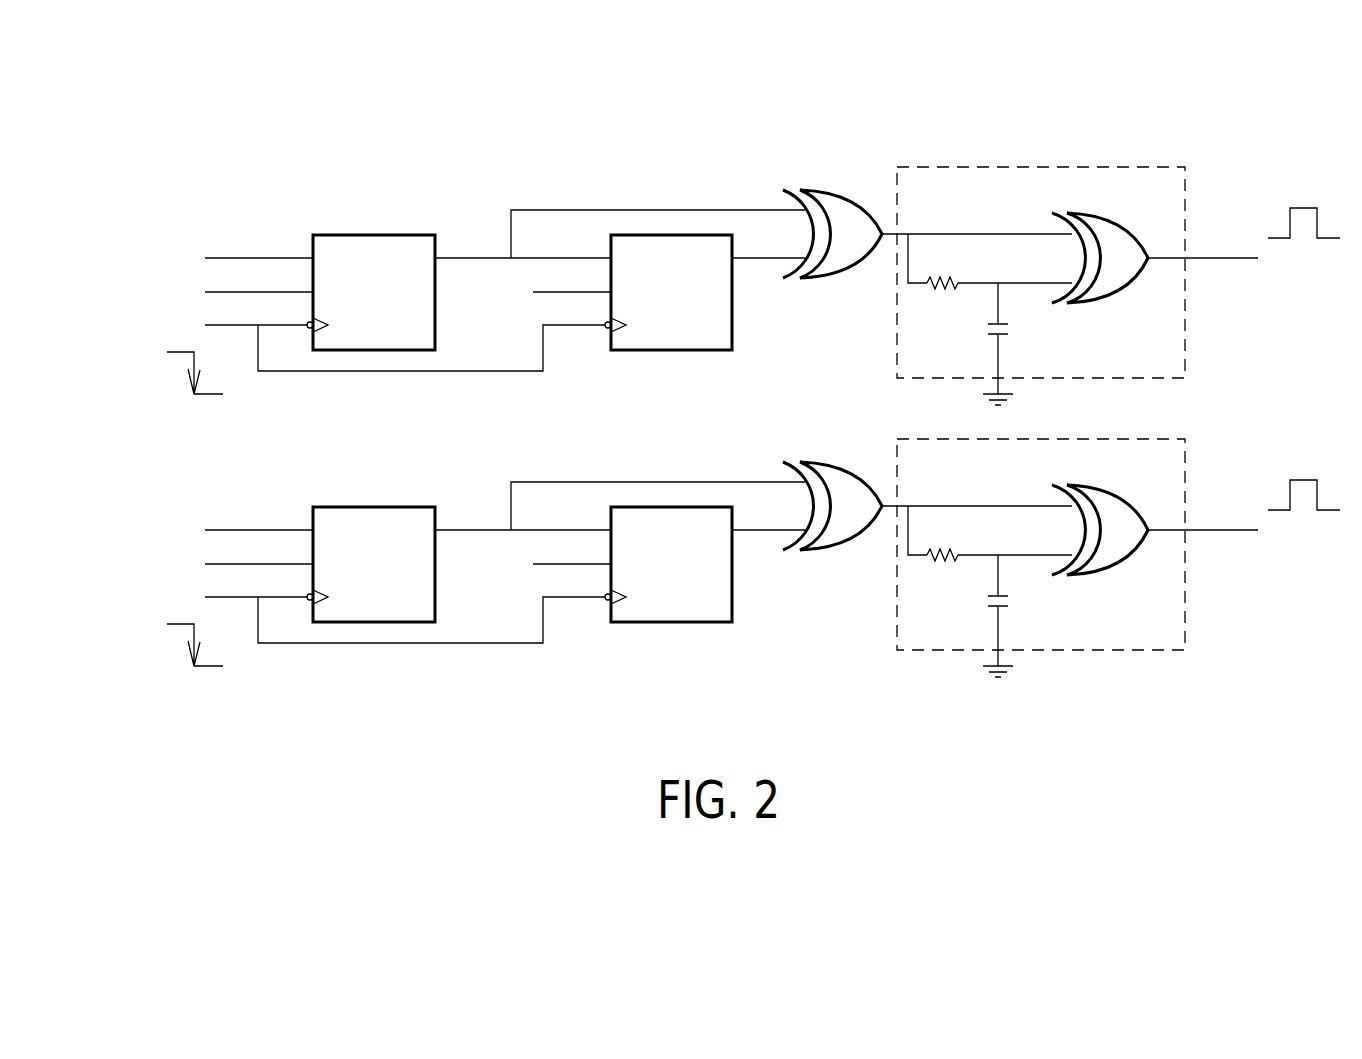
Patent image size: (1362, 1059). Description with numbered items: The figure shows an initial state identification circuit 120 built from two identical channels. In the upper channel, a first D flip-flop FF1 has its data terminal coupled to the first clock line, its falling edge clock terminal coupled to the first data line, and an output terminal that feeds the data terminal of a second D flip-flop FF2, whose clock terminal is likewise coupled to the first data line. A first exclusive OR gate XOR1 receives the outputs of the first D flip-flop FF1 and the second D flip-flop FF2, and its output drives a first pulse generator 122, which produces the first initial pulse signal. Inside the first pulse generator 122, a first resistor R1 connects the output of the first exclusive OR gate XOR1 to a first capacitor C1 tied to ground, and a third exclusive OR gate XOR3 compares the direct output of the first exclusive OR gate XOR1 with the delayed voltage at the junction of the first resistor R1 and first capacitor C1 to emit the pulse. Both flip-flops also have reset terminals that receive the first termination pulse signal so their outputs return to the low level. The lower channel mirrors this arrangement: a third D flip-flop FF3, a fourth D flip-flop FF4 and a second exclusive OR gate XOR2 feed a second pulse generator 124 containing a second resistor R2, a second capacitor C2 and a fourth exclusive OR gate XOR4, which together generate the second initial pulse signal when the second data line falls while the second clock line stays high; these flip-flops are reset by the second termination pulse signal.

The initial state identification circuit 120 is at (1145, 85).
The first pulse generator 122 is at (1042, 167).
The second pulse generator 124 is at (1041, 579).
The first D flip-flop FF1 is at (376, 235).
The second D flip-flop FF2 is at (673, 351).
The third D flip-flop FF3 is at (371, 531).
The fourth D flip-flop FF4 is at (668, 598).
The first exclusive OR gate XOR1 is at (835, 279).
The second exclusive OR gate XOR2 is at (832, 540).
The third exclusive OR gate XOR3 is at (1100, 304).
The fourth exclusive OR gate XOR4 is at (1100, 564).
The first resistor R1 is at (942, 301).
The second resistor R2 is at (942, 573).
The first capacitor C1 is at (1015, 338).
The second capacitor C2 is at (1015, 610).